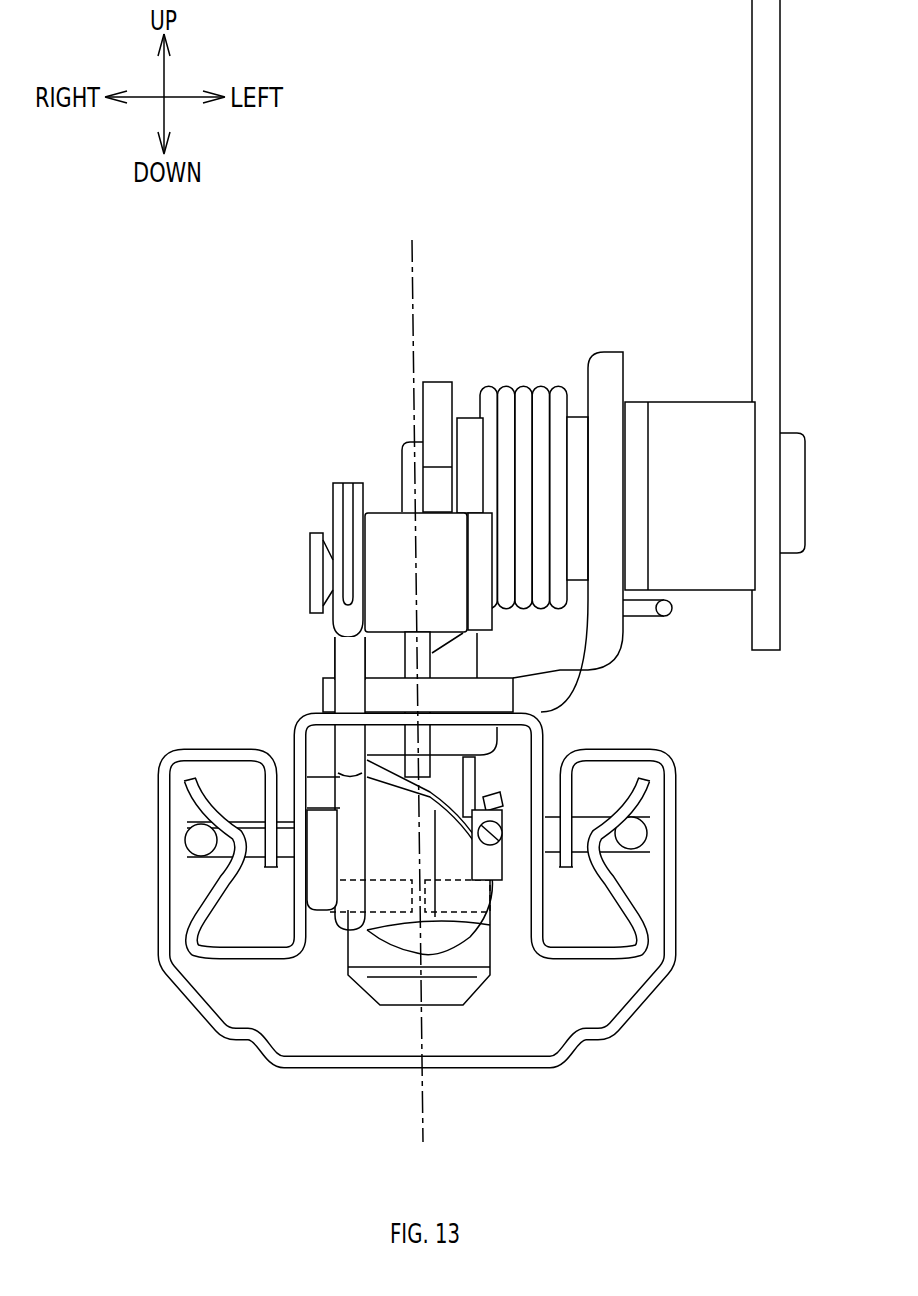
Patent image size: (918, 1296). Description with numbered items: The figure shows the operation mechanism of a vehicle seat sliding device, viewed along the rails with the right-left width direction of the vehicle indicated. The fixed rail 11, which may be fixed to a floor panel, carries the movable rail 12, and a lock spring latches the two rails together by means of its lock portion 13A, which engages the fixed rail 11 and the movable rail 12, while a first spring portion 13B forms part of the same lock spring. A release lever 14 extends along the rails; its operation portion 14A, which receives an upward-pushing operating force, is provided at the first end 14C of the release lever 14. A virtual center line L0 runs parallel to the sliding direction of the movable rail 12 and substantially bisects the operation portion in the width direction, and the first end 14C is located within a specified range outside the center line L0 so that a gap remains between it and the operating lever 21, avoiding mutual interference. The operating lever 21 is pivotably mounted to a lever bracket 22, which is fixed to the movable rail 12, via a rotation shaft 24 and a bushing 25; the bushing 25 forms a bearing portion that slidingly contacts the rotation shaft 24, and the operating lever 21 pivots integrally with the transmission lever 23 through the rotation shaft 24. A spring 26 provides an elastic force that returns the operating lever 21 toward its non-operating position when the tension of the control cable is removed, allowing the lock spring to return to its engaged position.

The fixed rail 11 is at (680, 877).
The movable rail 12 is at (542, 730).
The lock portion 13A is at (647, 830).
The first spring portion 13B is at (515, 860).
The release lever 14 is at (317, 632).
The operation portion 14A is at (385, 513).
The first end 14C is at (333, 650).
The operating lever 21 is at (335, 665).
The lever bracket 22 is at (623, 650).
The transmission lever 23 is at (750, 80).
The rotation shaft 24 is at (688, 400).
The bushing 25 is at (578, 413).
The spring 26 is at (517, 383).
The center line L0 is at (423, 1118).